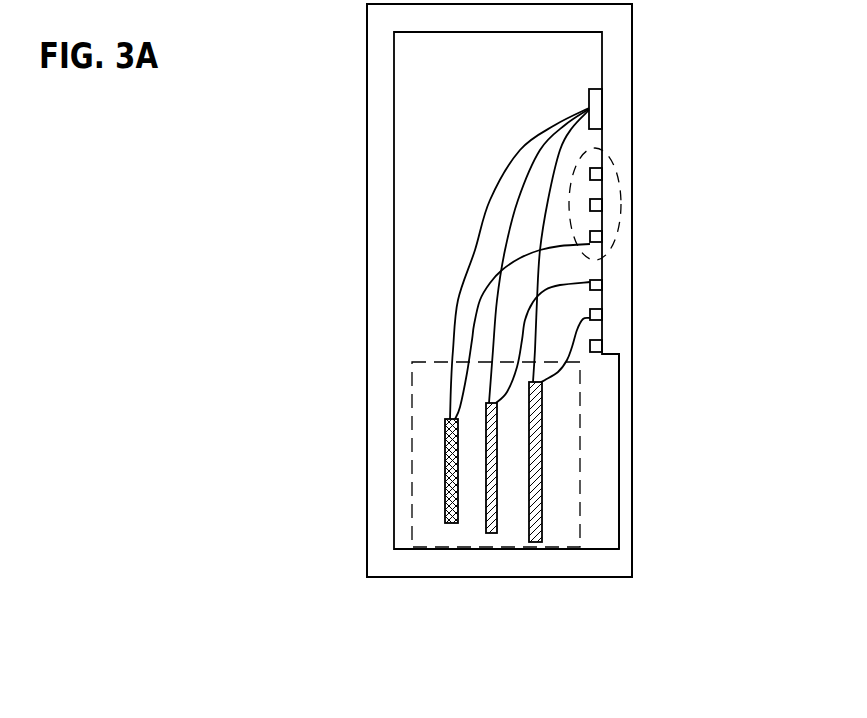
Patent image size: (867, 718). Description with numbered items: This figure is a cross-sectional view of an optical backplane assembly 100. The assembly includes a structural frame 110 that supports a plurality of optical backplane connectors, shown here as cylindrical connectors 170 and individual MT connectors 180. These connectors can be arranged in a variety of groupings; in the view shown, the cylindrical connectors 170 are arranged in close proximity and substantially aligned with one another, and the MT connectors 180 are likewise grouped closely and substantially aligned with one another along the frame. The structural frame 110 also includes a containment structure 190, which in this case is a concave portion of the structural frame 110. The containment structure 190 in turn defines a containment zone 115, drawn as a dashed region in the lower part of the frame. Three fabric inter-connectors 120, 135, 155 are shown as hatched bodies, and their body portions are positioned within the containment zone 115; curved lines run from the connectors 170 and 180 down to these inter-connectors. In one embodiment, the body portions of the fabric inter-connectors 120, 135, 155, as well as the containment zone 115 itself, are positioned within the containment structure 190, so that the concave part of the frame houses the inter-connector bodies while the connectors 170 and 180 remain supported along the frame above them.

The optical backplane assembly 100 is at (724, 41).
The structural frame 110 is at (632, 148).
The containment zone 115 is at (580, 500).
The fabric inter-connector 120 is at (542, 460).
The fabric inter-connector 135 is at (486, 527).
The fabric inter-connector 155 is at (445, 458).
The cylindrical connector 170 is at (602, 109).
The MT connector 180 is at (617, 223).
The containment structure 190 is at (618, 373).